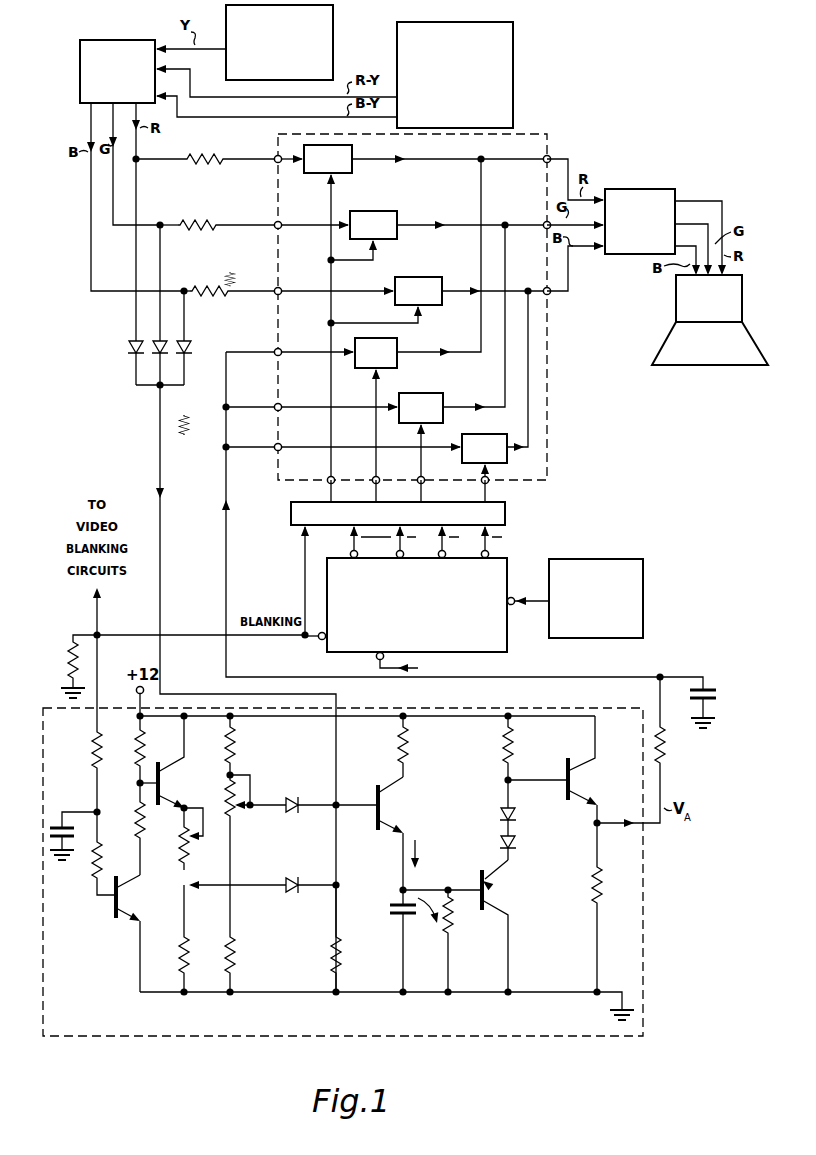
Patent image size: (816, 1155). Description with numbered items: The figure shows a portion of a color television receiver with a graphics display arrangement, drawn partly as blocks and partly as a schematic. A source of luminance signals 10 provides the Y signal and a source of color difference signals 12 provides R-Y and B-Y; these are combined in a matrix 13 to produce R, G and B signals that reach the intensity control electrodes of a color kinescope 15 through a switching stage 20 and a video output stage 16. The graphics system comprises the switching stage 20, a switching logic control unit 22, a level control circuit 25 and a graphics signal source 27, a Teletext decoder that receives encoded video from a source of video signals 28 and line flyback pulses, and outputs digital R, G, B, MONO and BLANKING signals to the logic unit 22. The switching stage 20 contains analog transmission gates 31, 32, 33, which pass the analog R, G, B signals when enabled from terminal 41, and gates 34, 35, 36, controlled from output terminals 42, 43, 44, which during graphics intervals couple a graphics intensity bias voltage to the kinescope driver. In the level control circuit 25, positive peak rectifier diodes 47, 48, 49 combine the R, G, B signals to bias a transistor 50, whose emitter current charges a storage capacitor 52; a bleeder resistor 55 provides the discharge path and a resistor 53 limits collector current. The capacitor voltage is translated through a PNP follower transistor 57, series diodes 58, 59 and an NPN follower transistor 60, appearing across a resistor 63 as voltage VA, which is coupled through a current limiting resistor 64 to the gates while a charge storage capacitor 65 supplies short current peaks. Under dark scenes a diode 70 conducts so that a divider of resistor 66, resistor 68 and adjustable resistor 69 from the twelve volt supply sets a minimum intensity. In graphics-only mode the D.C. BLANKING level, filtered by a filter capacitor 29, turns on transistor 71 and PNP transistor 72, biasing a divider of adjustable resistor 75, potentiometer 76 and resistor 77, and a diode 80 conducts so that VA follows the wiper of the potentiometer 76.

The source of luminance signals 10 is at (333, 28).
The source of color difference signals 12 is at (513, 68).
The matrix 13 is at (81, 71).
The color kinescope 15 is at (675, 313).
The video output stage 16 is at (645, 189).
The switching stage 20 is at (692, 417).
The switching logic control unit 22 is at (505, 510).
The level control circuit 25 is at (389, 654).
The graphics signal source 27 is at (507, 558).
The source of video signals 28 is at (643, 573).
The filter capacitor 29 is at (53, 826).
The gate 31 is at (352, 172).
The gate 32 is at (390, 240).
The gate 33 is at (434, 305).
The gate 34 is at (397, 366).
The gate 35 is at (443, 394).
The gate 36 is at (490, 434).
The terminal of logic unit 41 is at (327, 477).
The output terminal of logic unit 42 is at (372, 477).
The output terminal of logic unit 43 is at (417, 477).
The output terminal of logic unit 44 is at (482, 478).
The positive peak rectifier diode 47 is at (127, 348).
The positive peak rectifier diode 48 is at (153, 340).
The positive peak rectifier diode 49 is at (191, 342).
The transistor 50 is at (424, 813).
The storage capacitor 52 is at (389, 912).
The resistor 53 is at (408, 747).
The bleeder resistor 55 is at (454, 929).
The PNP follower transistor 57 is at (526, 903).
The diode 58 is at (516, 845).
The diode 59 is at (516, 812).
The NPN follower transistor 60 is at (606, 787).
The resistor 63 is at (587, 890).
The current limiting resistor 64 is at (666, 760).
The charge storage capacitor 65 is at (710, 690).
The resistor 66 is at (235, 745).
The resistor 68 is at (236, 950).
The adjustable resistor 69 is at (256, 855).
The diode 70 is at (293, 798).
The transistor 71 is at (146, 905).
The PNP transistor 72 is at (194, 779).
The adjustable resistor 75 is at (214, 803).
The potentiometer 76 is at (216, 875).
The resistor 77 is at (191, 960).
The diode 80 is at (293, 880).